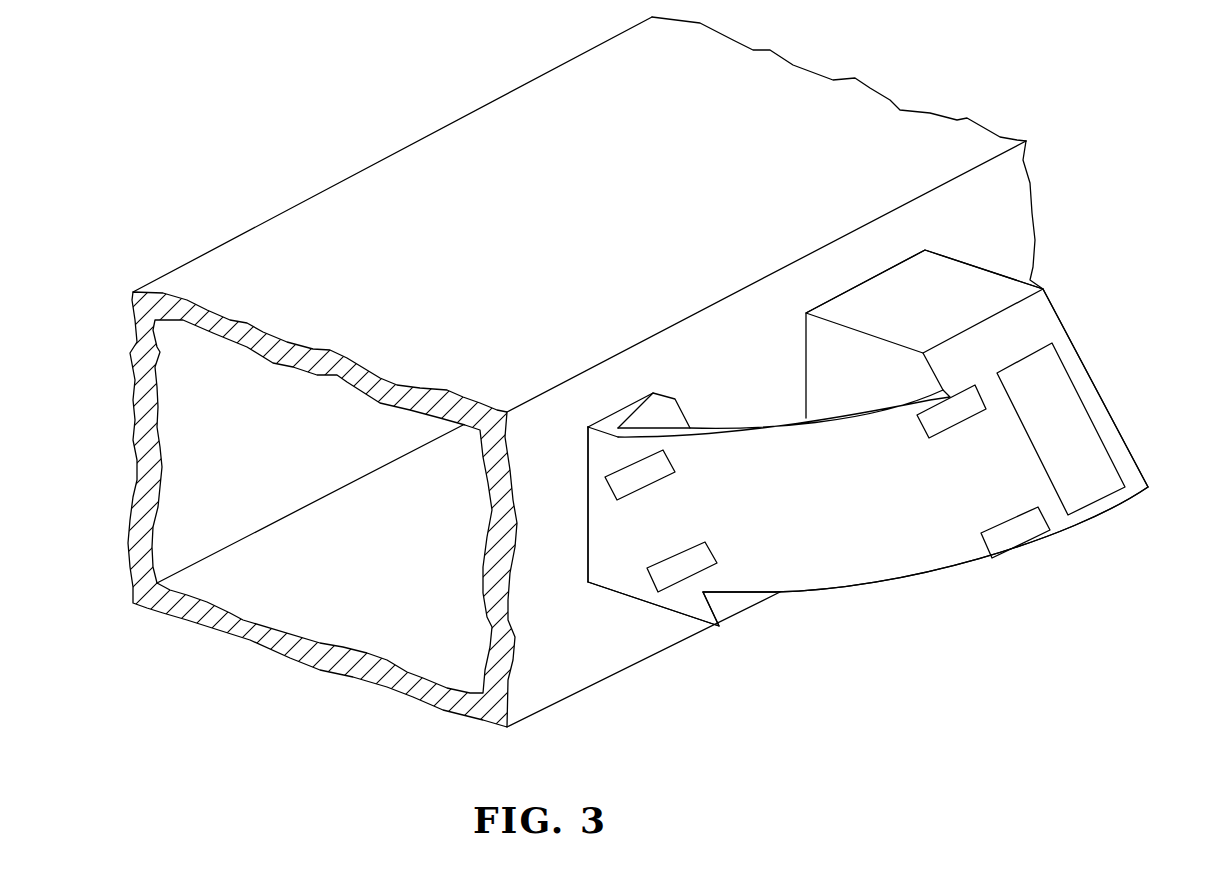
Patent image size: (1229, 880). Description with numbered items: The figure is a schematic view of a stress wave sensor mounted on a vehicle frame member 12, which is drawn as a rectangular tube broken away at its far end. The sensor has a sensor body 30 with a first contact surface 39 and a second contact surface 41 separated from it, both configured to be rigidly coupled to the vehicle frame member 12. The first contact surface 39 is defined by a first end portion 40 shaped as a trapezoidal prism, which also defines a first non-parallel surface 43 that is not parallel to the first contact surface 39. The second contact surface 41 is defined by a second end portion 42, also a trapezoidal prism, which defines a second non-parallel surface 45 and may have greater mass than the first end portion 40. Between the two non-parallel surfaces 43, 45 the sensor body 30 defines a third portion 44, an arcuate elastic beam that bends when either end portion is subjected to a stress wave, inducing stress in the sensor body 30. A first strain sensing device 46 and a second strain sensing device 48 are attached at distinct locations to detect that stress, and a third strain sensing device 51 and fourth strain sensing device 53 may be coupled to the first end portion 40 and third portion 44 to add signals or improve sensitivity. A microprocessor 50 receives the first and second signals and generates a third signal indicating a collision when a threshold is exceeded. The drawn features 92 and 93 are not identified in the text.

The vehicle frame member 12 is at (923, 128).
The sensor body 30 is at (1088, 258).
The first contact surface 39 is at (588, 508).
The first end portion 40 is at (640, 405).
The second contact surface 41 is at (847, 296).
The second end portion 42 is at (960, 292).
The first non-parallel surface 43 is at (730, 605).
The third portion 44 is at (903, 558).
The second non-parallel surface 45 is at (1047, 322).
The first strain sensing device 46 is at (946, 408).
The second strain sensing device 48 is at (1022, 528).
The microprocessor 50 is at (1059, 395).
The third strain sensing device 51 is at (622, 478).
The fourth strain sensing device 53 is at (670, 573).
The bottom edge of clip 92 is at (842, 592).
The spring arm 93 is at (760, 428).